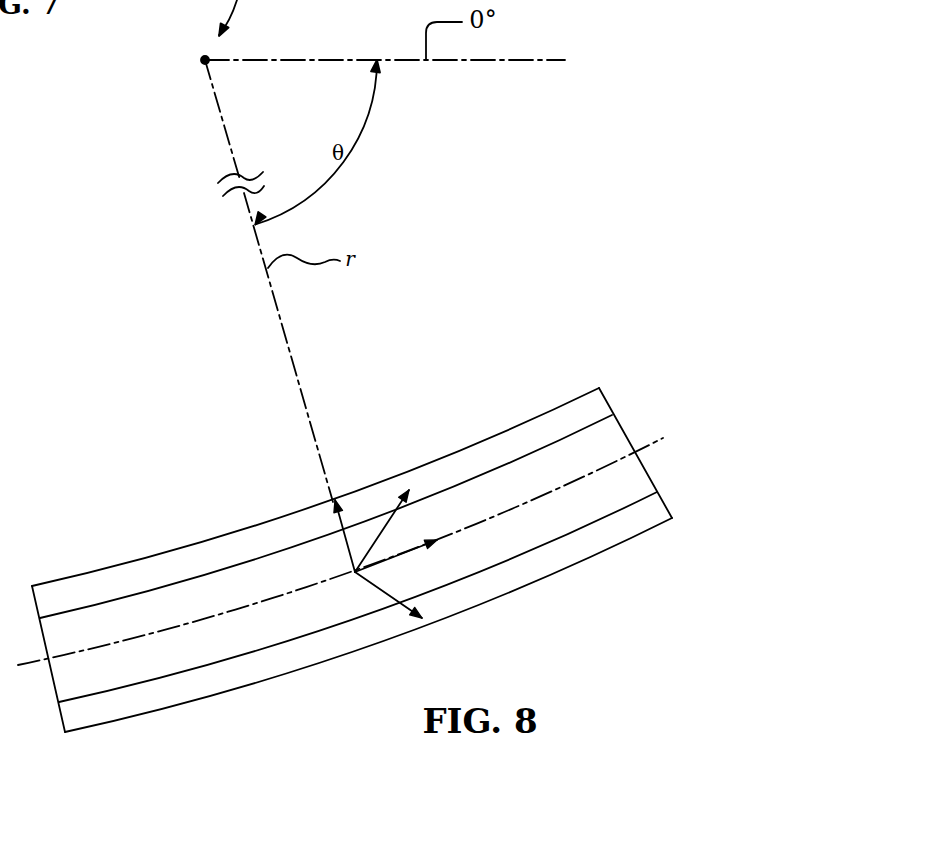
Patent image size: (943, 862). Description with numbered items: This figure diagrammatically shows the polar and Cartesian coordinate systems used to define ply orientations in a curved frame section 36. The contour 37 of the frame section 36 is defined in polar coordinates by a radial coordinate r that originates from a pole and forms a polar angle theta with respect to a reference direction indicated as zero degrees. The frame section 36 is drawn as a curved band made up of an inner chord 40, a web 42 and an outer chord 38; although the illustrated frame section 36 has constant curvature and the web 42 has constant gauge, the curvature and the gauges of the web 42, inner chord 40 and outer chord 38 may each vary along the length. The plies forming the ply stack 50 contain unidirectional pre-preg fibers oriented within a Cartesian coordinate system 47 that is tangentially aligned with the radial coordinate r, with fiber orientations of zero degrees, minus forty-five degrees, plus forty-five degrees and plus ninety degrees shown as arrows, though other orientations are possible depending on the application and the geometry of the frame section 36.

The frame section 36 is at (245, 466).
The contour 37 is at (188, 536).
The outer chord 38 is at (630, 522).
The inner chord 40 is at (560, 422).
The web 42 is at (608, 436).
The Cartesian coordinate system 47 is at (350, 606).
The ply stack 50 is at (547, 594).